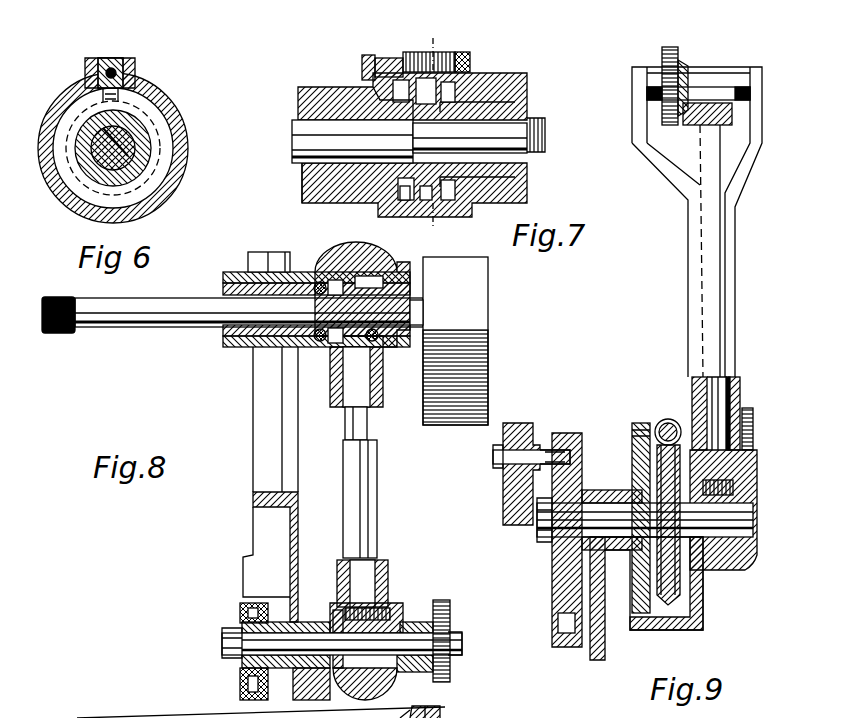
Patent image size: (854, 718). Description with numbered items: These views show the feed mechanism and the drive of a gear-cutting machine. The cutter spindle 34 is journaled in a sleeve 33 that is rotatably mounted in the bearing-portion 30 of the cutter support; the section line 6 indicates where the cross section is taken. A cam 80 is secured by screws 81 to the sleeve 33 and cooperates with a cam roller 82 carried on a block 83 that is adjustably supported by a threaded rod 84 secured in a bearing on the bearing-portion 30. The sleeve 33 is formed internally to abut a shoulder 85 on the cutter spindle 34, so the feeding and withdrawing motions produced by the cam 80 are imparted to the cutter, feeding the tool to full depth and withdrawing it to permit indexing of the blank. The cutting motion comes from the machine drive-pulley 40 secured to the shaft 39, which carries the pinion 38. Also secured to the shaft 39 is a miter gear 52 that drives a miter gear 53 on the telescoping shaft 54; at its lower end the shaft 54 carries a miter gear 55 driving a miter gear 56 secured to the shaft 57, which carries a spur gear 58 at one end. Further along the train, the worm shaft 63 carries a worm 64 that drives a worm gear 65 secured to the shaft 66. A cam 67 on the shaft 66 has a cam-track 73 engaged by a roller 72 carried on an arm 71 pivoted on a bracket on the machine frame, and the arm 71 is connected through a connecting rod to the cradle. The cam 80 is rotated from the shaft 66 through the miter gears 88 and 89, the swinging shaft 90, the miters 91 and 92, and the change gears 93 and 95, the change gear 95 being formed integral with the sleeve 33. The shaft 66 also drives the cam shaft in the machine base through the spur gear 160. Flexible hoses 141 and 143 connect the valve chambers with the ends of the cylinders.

In FIG. 7, the section line 6— 6 is at (438, 132).
In FIG. 6, the bearing-portion 30 is at (160, 187).
In FIG. 7, the bearing-portion 30 is at (332, 204).
In FIG. 6, the sleeve 33 is at (130, 178).
In FIG. 7, the sleeve 33 is at (300, 178).
In FIG. 6, the cutter spindle 34 is at (92, 176).
In FIG. 7, the cutter spindle 34 is at (300, 130).
In FIG. 8, the pinion 38 is at (60, 334).
In FIG. 8, the shaft 39 is at (178, 302).
In FIG. 8, the machine drive-pulley 40 is at (480, 292).
In FIG. 8, the miter gear 52 is at (318, 280).
In FIG. 8, the miter gear 53 is at (378, 340).
In FIG. 8, the telescoping shaft 54 is at (378, 482).
In FIG. 8, the miter gear 55 is at (392, 600).
In FIG. 8, the miter gear 56 is at (388, 692).
In FIG. 8, the shaft 57 is at (402, 634).
In FIG. 8, the spur gear 58 is at (447, 604).
In FIG. 9, the worm shaft 63 is at (664, 422).
In FIG. 9, the worm 64 is at (672, 420).
In FIG. 9, the worm gear 65 is at (670, 605).
In FIG. 9, the shaft 66 is at (608, 515).
In FIG. 9, the cam 67 is at (557, 582).
In FIG. 9, the arm 71 is at (525, 425).
In FIG. 9, the roller 72 is at (568, 436).
In FIG. 9, the cam-track 73 is at (565, 624).
In FIG. 6, the cam 80 is at (166, 132).
In FIG. 7, the cam 80 is at (402, 206).
In FIG. 7, the screws 81 is at (430, 218).
In FIG. 6, the cam roller 82 is at (122, 94).
In FIG. 7, the cam roller 82 is at (420, 72).
In FIG. 6, the block 83 is at (112, 63).
In FIG. 7, the block 83 is at (462, 55).
In FIG. 6, the threaded rod 84 is at (124, 73).
In FIG. 7, the threaded rod 84 is at (386, 56).
In FIG. 7, the shoulder 85 is at (370, 100).
In FIG. 9, the miter gear 88 is at (708, 568).
In FIG. 9, the miter gear 89 is at (755, 482).
In FIG. 9, the swinging shaft 90 is at (722, 396).
In FIG. 9, the miter 91 is at (712, 104).
In FIG. 9, the miter 92 is at (690, 74).
In FIG. 9, the change gear 93 is at (672, 48).
In FIG. 7, the change gear 95 is at (478, 86).
In FIG. 8, the flexible hose 141 is at (105, 716).
In FIG. 8, the flexible hose 143 is at (425, 717).
In FIG. 9, the spur gear 160 is at (640, 424).